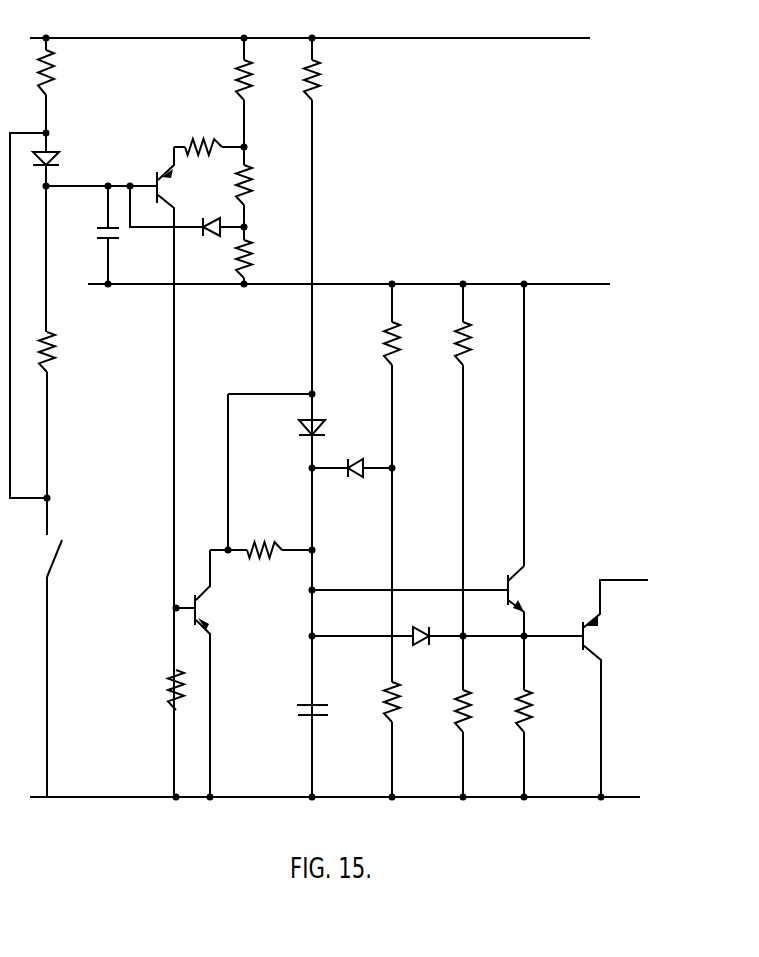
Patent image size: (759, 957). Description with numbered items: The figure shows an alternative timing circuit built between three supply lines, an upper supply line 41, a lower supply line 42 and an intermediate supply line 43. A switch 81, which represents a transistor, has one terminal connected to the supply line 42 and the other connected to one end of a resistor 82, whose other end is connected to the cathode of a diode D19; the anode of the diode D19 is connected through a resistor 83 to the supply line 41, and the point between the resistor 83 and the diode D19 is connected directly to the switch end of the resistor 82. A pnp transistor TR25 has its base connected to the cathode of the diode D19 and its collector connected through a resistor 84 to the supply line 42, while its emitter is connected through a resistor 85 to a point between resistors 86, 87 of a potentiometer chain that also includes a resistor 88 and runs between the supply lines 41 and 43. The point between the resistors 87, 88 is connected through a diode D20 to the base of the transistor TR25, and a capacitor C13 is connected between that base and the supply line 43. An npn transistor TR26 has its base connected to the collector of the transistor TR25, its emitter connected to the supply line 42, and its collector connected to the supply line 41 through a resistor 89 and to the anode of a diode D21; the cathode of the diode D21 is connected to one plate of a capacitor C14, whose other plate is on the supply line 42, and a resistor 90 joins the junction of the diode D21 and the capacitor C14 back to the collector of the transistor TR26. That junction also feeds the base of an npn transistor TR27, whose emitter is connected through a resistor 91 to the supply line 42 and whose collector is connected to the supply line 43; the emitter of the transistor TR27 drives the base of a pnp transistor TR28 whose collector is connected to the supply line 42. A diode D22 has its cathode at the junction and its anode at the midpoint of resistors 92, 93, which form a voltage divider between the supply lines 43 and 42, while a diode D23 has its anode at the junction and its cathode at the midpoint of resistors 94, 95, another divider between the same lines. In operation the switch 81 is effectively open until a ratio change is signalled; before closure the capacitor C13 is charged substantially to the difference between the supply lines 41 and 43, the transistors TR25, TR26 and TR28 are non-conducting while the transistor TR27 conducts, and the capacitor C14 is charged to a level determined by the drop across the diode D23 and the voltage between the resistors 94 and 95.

The supply line 41 is at (422, 37).
The supply line 42 is at (625, 797).
The supply line 43 is at (580, 264).
The switch 81 is at (62, 548).
The resistor 82 is at (62, 357).
The resistor 83 is at (56, 80).
The resistor 84 is at (168, 697).
The resistor 85 is at (212, 140).
The resistor 86 is at (282, 66).
The resistor 87 is at (280, 165).
The resistor 88 is at (257, 262).
The resistor 89 is at (323, 88).
The resistor 90 is at (266, 540).
The resistor 91 is at (520, 700).
The resistor 92 is at (384, 345).
The resistor 93 is at (384, 700).
The resistor 94 is at (455, 344).
The resistor 95 is at (458, 700).
The capacitor C13 is at (98, 228).
The capacitor C14 is at (306, 712).
The diode D19 is at (60, 163).
The diode D20 is at (206, 232).
The diode D21 is at (305, 420).
The diode D22 is at (352, 483).
The diode D23 is at (430, 640).
The pnp transistor TR25 is at (164, 186).
The npn transistor TR26 is at (204, 604).
The npn transistor TR27 is at (501, 583).
The pnp transistor TR28 is at (590, 640).